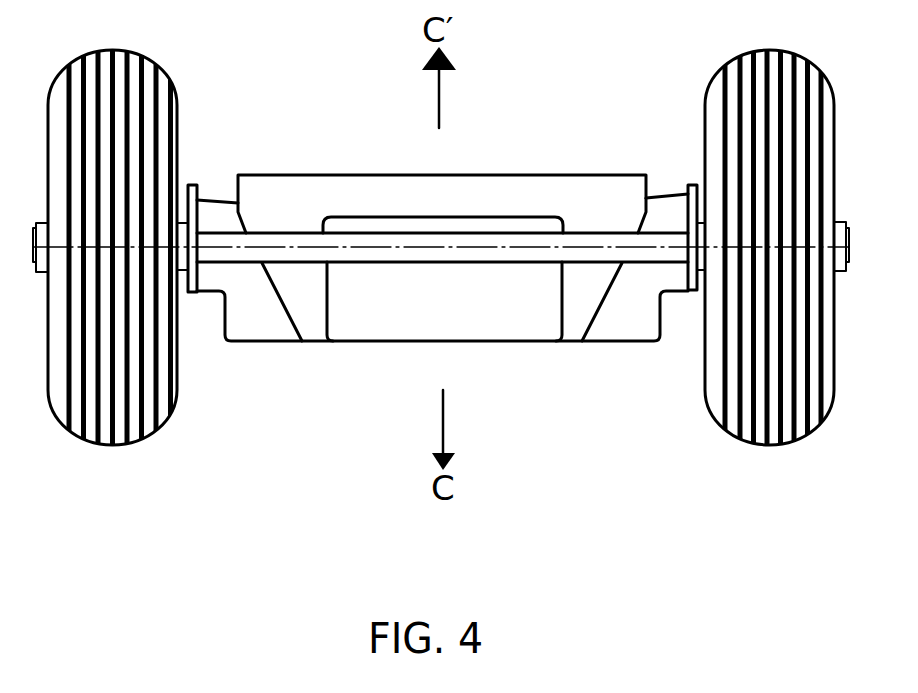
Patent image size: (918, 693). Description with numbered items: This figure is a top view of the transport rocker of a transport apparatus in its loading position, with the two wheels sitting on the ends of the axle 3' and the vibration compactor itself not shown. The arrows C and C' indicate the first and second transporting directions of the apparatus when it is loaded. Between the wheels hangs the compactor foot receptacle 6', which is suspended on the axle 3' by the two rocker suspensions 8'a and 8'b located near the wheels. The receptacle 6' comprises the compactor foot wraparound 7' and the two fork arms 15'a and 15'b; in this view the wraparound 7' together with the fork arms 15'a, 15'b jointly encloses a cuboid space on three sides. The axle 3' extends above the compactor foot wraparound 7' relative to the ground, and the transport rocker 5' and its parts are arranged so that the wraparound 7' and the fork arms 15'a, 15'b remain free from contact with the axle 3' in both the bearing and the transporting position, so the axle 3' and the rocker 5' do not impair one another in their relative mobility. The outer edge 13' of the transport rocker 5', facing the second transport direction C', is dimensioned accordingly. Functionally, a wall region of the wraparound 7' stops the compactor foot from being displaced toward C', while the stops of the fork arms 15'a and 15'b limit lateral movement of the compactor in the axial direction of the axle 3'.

The axle 3' is at (442, 175).
The compactor foot receptacle 6' is at (442, 146).
The outer edge of the transport rocker 13' is at (206, 114).
The transport rocker 5' is at (667, 136).
The rocker suspension 8'a is at (215, 314).
The rocker suspension 8'b is at (677, 305).
The compactor foot wraparound 7' is at (442, 330).
The fork arm 15'a is at (593, 357).
The fork arm 15'b is at (306, 341).